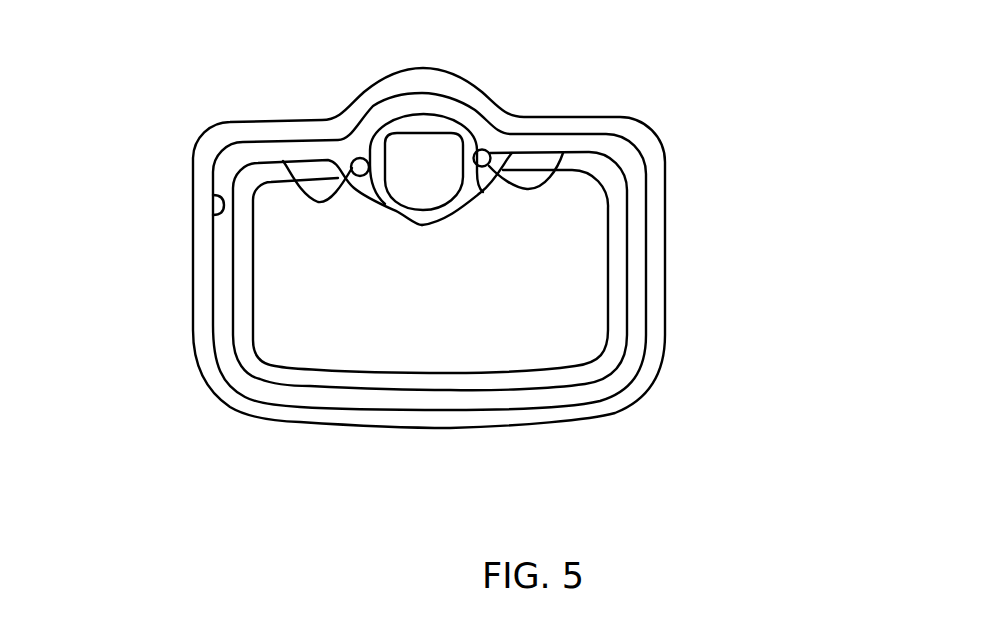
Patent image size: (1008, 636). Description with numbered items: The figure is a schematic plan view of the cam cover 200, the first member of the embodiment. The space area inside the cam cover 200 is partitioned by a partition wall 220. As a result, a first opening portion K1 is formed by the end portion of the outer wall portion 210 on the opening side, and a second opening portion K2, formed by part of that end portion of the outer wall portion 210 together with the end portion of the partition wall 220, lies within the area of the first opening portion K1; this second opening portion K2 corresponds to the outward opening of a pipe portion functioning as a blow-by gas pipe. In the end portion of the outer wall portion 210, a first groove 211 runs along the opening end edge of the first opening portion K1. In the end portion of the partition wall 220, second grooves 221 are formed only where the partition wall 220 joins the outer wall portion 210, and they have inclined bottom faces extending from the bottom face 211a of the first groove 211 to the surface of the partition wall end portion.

The cam cover 200 is at (722, 123).
The outer wall portion 210 is at (655, 253).
The first groove 211 is at (212, 194).
The bottom face of the first groove 211a is at (218, 247).
The partition wall 220 is at (452, 211).
The second grooves 221 is at (291, 181).
The first opening portion K1 is at (297, 292).
The second opening portion K2 is at (418, 163).